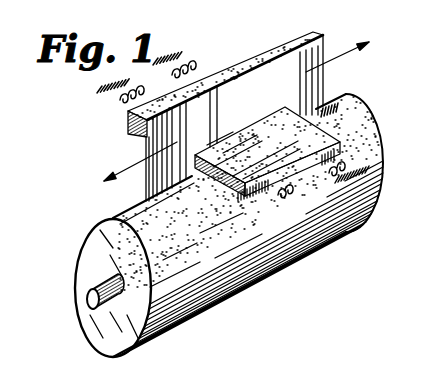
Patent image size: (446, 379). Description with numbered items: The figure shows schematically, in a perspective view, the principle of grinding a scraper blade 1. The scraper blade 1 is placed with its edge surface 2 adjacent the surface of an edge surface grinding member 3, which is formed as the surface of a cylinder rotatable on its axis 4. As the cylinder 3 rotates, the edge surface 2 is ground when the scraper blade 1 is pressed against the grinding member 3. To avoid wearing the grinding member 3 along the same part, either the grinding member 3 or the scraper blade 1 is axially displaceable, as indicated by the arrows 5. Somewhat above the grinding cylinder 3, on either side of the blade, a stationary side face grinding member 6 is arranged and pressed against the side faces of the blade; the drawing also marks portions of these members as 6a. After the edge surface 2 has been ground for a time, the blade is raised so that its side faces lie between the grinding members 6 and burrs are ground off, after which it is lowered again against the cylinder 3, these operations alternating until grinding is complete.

The scraper blade 1 is at (282, 67).
The edge surface 2 is at (113, 219).
The edge surface grinding member 3 is at (331, 242).
The axis 4 is at (148, 263).
The arrows 5 is at (127, 166).
The side face grinding member 6 is at (209, 75).
The hook elements 6a is at (137, 90).